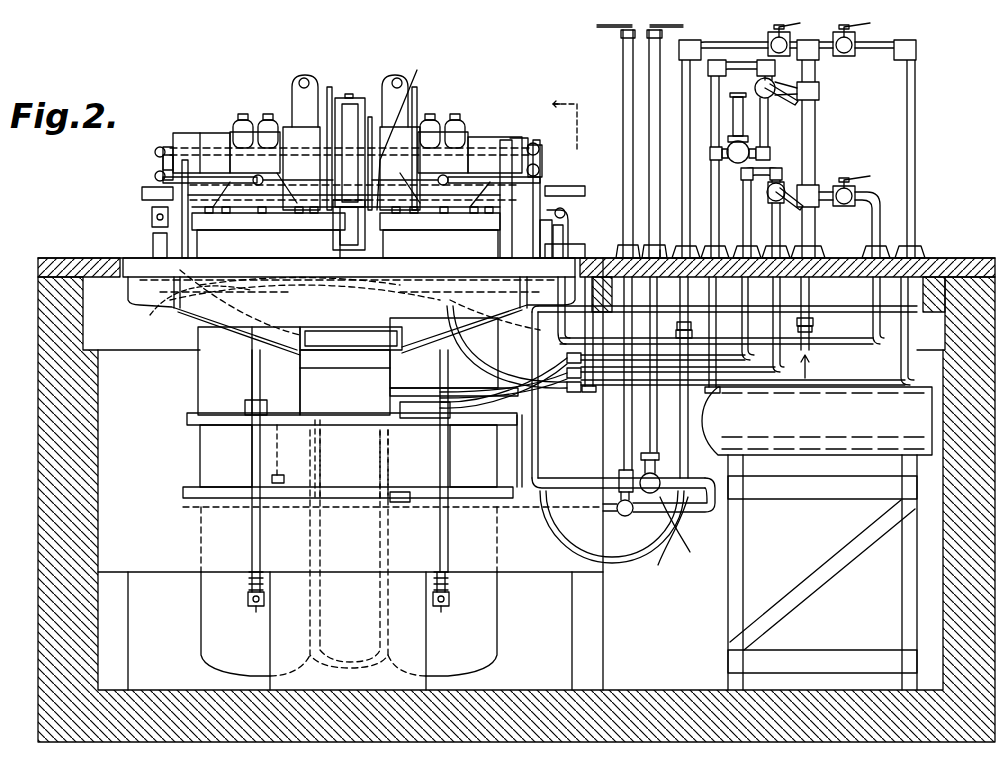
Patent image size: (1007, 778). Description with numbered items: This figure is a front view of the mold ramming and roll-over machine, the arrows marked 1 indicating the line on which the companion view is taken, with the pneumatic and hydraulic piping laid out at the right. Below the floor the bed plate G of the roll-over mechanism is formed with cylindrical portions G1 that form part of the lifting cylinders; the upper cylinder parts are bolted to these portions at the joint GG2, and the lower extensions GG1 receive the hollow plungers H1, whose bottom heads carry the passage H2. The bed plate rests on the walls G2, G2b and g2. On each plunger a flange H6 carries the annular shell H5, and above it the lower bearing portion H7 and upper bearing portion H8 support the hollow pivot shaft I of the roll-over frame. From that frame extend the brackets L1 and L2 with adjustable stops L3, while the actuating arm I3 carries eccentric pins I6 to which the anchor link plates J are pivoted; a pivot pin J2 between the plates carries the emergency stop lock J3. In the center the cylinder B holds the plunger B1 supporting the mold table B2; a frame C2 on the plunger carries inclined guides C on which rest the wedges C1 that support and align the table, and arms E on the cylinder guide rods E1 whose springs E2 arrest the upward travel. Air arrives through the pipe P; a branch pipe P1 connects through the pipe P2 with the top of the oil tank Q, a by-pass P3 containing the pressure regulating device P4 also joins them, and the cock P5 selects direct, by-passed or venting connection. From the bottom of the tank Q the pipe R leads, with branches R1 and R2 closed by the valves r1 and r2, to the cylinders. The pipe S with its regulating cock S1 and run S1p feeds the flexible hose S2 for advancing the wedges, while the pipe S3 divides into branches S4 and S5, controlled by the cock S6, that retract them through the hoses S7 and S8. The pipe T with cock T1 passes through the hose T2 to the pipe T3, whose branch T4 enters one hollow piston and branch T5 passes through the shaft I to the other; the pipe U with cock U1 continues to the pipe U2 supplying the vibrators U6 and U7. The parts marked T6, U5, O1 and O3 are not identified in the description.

The building / section line 1 is at (604, 753).
The pipe T is at (748, 44).
The regulating cock T1 is at (784, 39).
The flexible hose T2 is at (650, 564).
The pipe T3 is at (541, 178).
The branch T4 is at (518, 133).
The branch T5 is at (165, 147).
The block T6 is at (200, 133).
The pipe S is at (612, 394).
The regulating cock S1 is at (858, 34).
The pipe run of S S1p is at (535, 392).
The flexible hose S2 is at (530, 395).
The pipe S3 is at (793, 192).
The branch pipe S4 is at (743, 200).
The branch pipe S5 is at (805, 318).
The cock S6 is at (785, 202).
The flexible hose S7 is at (514, 349).
The flexible hose S8 is at (572, 395).
The air pressure pipe P is at (812, 342).
The branch pipe P1 is at (795, 84).
The pipe P2 is at (762, 62).
The by-pass pipe P3 is at (740, 149).
The pressure regulating device P4 is at (752, 112).
The cock P5 is at (770, 104).
The pipe U is at (835, 186).
The cock U1 is at (852, 182).
The pipe U2 is at (578, 252).
The pipe U5 is at (569, 214).
The vibrator U6 is at (558, 236).
The vibrator U7 is at (152, 245).
The oil tank Q is at (817, 538).
The pipe R is at (682, 522).
The branch pipe R1 is at (672, 560).
The branch pipe R2 is at (598, 481).
The valve r1 is at (625, 516).
The valve r2 is at (660, 480).
The inclined guides C is at (183, 318).
The wedges C1 is at (200, 330).
The frame C2 is at (351, 338).
The hollow plunger H1 is at (519, 430).
The passage H2 is at (249, 371).
The annular cylindrical shell H5 is at (454, 357).
The flange H6 is at (243, 222).
The lower bearing portion H7 is at (262, 120).
The upper bearing portion H8 is at (235, 130).
The cylinder B is at (349, 549).
The plunger B1 is at (345, 382).
The mold supporting table B2 is at (347, 244).
The laterally projecting arms E is at (268, 404).
The rods E1 is at (255, 372).
The springs E2 is at (247, 580).
The bed plate G is at (341, 461).
The cylindrical portions G1 is at (348, 456).
The wall G2 is at (192, 425).
The wall G2b is at (309, 672).
The cylinder extension GG1 is at (349, 624).
The bolted joint GG2 is at (205, 405).
The wall g2 is at (350, 539).
The pivot I is at (500, 135).
The actuating arm I3 is at (352, 110).
The eccentric pins I6 is at (360, 98).
The link plates J is at (422, 82).
The pivot pin J2 is at (400, 200).
The emergency stop lock J3 is at (349, 225).
The brackets L1 is at (285, 183).
The brackets L2 is at (351, 142).
The adjustable stops L3 is at (304, 76).
The plate O1 is at (150, 192).
The valve O3 is at (152, 214).